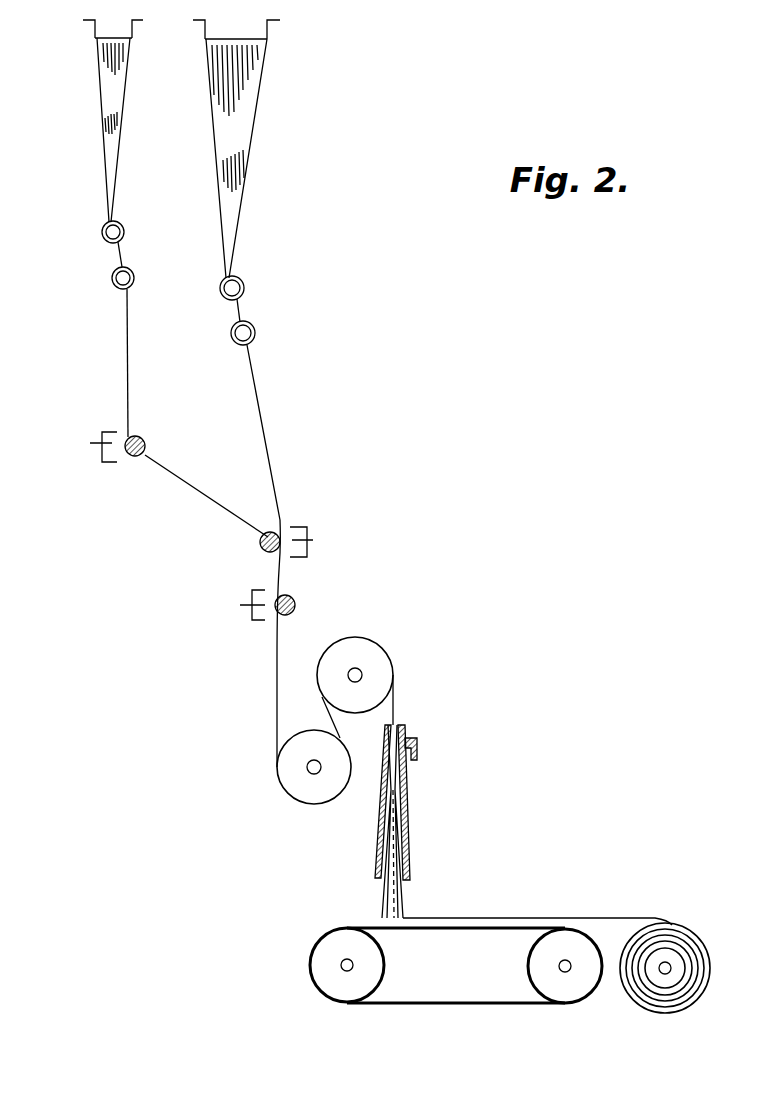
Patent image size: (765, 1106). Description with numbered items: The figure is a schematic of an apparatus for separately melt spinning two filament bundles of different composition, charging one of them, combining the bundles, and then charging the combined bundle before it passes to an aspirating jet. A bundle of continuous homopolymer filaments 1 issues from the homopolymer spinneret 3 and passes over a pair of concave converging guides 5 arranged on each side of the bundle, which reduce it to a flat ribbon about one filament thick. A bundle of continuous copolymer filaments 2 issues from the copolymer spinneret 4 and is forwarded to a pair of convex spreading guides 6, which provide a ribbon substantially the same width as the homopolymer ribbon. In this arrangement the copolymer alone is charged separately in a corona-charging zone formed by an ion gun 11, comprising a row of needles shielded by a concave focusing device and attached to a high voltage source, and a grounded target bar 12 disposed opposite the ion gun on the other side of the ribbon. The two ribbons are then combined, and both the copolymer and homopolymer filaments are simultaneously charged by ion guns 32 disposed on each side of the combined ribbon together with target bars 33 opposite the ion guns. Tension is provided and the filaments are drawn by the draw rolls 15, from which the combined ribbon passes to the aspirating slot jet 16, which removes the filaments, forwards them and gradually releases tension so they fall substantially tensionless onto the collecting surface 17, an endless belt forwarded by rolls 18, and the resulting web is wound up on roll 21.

The continuous homopolymer filaments 1 is at (237, 157).
The continuous copolymer filaments 2 is at (105, 170).
The homopolymer spinneret 3 is at (262, 36).
The copolymer spinneret 4 is at (97, 33).
The concave converging guides 5 is at (245, 286).
The convex spreading guides 6 is at (103, 232).
The ion gun 11 is at (97, 455).
The target bar 12 is at (147, 445).
The draw rolls 15 is at (378, 670).
The slot-jet aspirator 16 is at (412, 848).
The collecting surface 17 is at (367, 925).
The rolls 18 is at (337, 988).
The wind-up roll 21 is at (675, 943).
The ion guns 32 is at (313, 540).
The target bars 33 is at (260, 542).